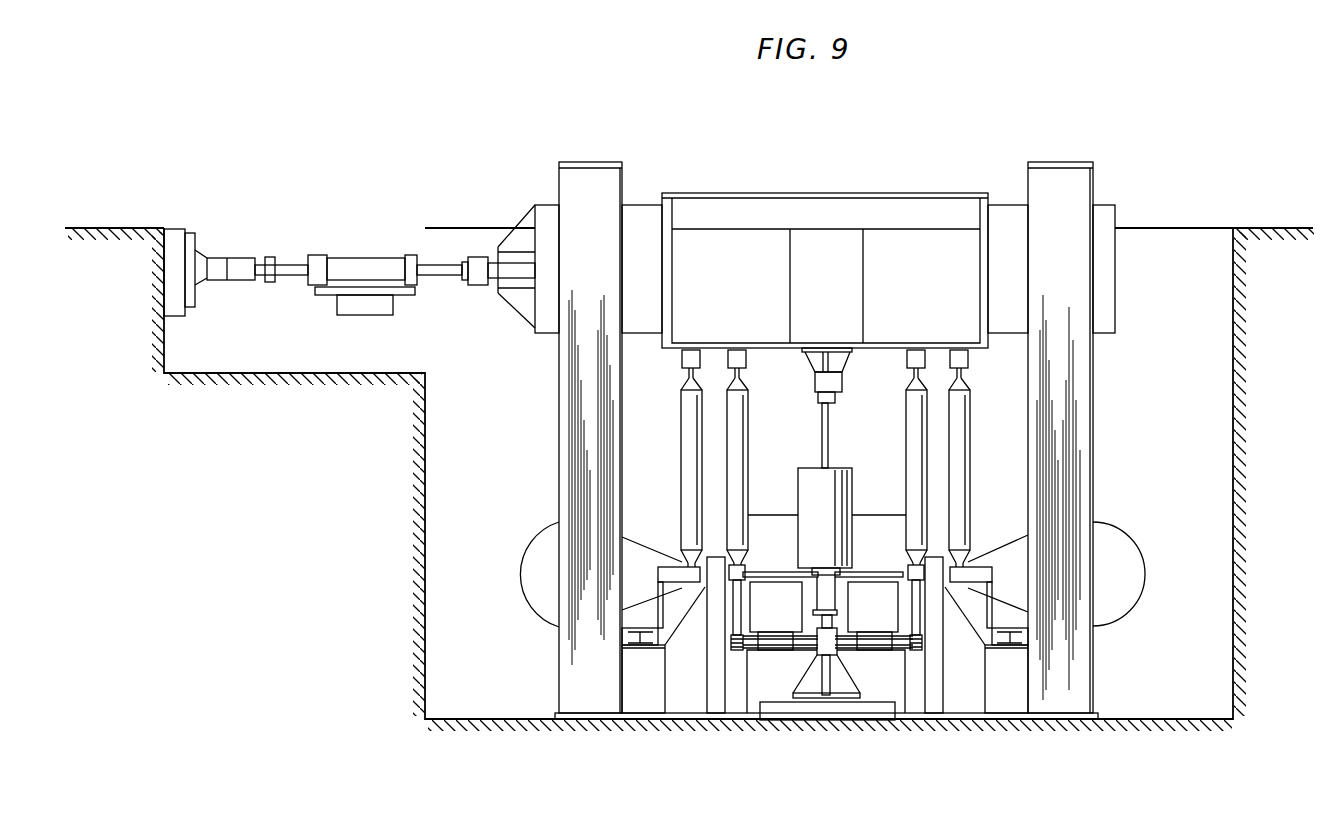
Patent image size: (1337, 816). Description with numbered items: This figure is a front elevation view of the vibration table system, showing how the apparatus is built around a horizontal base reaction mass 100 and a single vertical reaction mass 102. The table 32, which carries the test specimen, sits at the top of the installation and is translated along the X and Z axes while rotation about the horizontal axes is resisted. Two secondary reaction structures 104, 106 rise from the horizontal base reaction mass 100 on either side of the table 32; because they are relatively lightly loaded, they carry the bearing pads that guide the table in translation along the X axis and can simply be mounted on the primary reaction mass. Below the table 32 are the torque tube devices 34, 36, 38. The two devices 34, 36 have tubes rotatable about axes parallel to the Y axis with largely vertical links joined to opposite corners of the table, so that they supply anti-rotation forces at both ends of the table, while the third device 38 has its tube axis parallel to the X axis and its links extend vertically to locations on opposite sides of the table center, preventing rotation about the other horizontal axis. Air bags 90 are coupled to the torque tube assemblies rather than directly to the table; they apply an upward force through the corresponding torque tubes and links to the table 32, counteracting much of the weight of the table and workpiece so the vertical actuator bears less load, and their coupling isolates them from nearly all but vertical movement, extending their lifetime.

The table 32 is at (813, 192).
The torque tube device 34 is at (1108, 622).
The torque tube device 36 is at (529, 544).
The torque tube device 38 is at (842, 598).
The air bag 90 is at (781, 622).
The horizontal base reaction mass 100 is at (1126, 713).
The vertical reaction mass 102 is at (168, 373).
The secondary reaction structure 104 is at (1093, 464).
The secondary reaction structure 106 is at (559, 434).